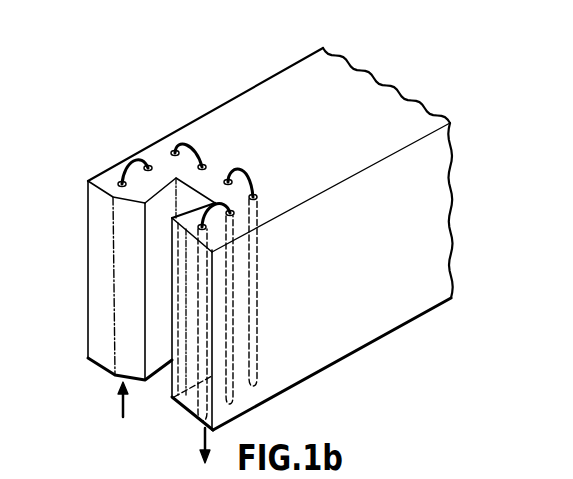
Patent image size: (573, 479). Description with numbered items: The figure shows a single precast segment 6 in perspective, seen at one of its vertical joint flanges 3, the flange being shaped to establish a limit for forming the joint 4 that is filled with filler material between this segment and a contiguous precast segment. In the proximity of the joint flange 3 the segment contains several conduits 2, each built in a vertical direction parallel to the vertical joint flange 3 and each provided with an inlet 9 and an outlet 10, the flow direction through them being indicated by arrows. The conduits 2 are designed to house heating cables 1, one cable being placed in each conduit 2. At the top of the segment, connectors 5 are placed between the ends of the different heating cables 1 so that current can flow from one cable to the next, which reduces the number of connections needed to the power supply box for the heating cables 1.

The heating cable 1 is at (203, 425).
The conduit 2 is at (200, 285).
The joint flange 3 is at (108, 233).
The joint 4 is at (157, 312).
The connector 5 is at (130, 165).
The precast segment 6 is at (390, 243).
The inlet 9 is at (119, 410).
The outlet 10 is at (180, 418).